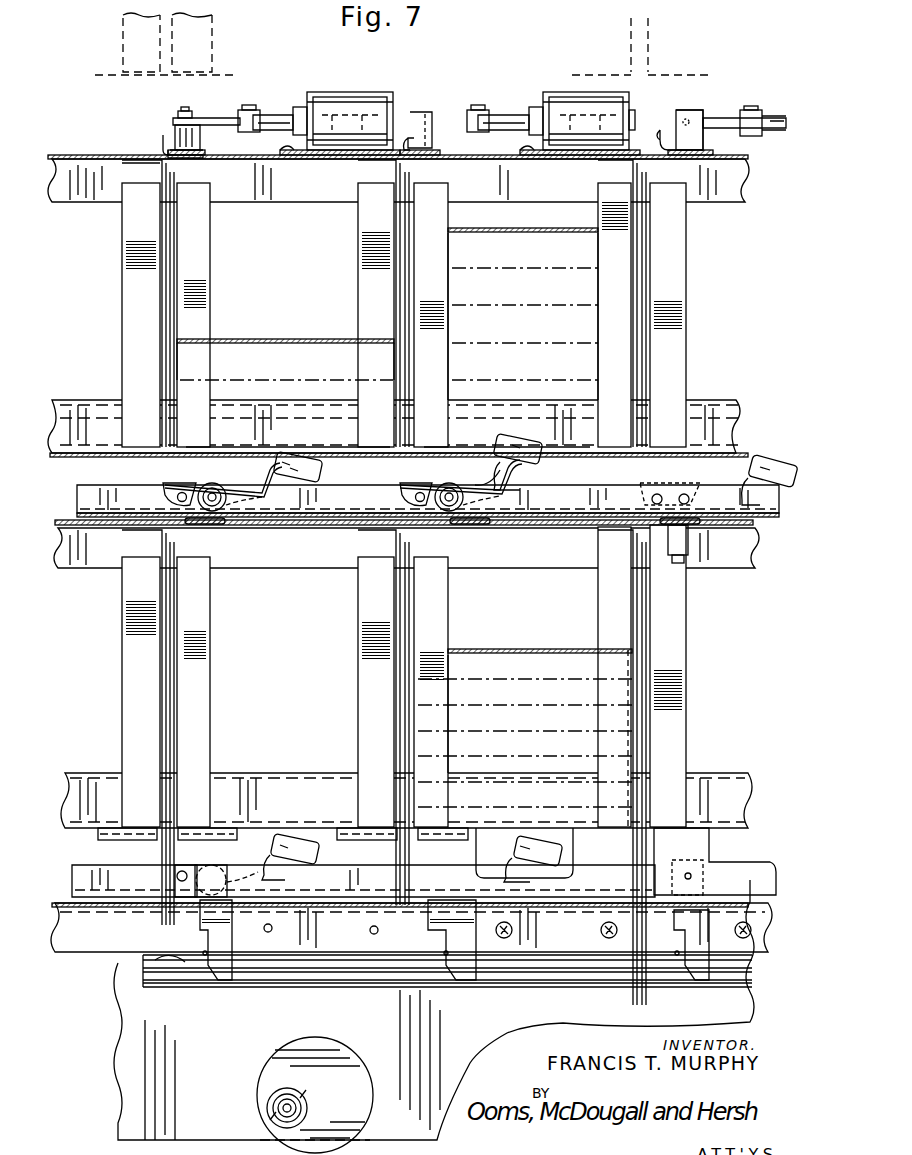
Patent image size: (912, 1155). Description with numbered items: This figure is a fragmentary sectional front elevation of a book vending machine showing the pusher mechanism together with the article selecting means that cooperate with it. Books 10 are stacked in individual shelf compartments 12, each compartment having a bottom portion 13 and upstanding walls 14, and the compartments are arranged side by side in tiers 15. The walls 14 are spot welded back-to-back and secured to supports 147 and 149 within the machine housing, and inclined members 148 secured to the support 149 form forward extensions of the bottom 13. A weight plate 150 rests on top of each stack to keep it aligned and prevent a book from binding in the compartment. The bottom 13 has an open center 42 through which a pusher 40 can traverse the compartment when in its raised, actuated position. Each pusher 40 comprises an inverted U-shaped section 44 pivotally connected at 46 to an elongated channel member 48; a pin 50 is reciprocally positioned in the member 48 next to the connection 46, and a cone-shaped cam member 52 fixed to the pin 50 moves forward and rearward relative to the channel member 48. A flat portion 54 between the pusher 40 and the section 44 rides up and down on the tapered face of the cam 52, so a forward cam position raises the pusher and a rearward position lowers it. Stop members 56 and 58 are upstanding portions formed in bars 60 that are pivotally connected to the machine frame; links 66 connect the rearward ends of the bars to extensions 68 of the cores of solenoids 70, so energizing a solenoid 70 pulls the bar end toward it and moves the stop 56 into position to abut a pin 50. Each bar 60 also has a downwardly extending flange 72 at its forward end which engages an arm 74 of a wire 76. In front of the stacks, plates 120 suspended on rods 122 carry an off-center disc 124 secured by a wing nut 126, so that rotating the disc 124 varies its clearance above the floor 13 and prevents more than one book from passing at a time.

The book 10 is at (268, 340).
The shelf compartment 12 is at (272, 230).
The bottom portion 13 is at (334, 456).
The upstanding wall 14 is at (348, 284).
The tier 15 is at (74, 326).
The pusher 40 is at (500, 438).
The open center 42 is at (240, 448).
The inverted U-shaped section 44 is at (168, 487).
The pivotal connection 46 is at (291, 687).
The elongated channel member 48 is at (78, 494).
The pin 50 is at (462, 500).
The cone-shaped cam member 52 is at (218, 488).
The flat portion 54 is at (234, 504).
The stop member 56 is at (420, 112).
The stop member 58 is at (224, 863).
The bar 60 is at (222, 527).
The link 66 is at (228, 117).
The core extension 68 is at (278, 119).
The solenoid 70 is at (322, 96).
The downwardly extending flange 72 is at (234, 942).
The arm 74 is at (202, 953).
The wire 76 is at (193, 988).
The plate 120 is at (134, 1045).
The rod 122 is at (529, 988).
The disc 124 is at (362, 1096).
The wing nut 126 is at (272, 1106).
The support 147 is at (720, 410).
The inclined member 148 is at (574, 848).
The support 149 is at (80, 952).
The weight plate 150 is at (561, 235).